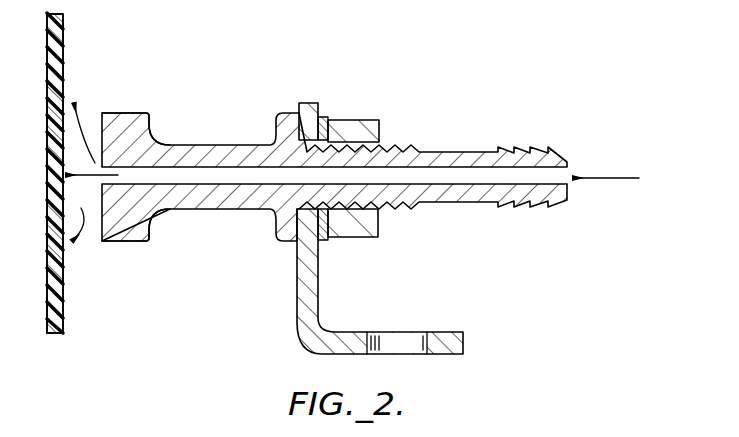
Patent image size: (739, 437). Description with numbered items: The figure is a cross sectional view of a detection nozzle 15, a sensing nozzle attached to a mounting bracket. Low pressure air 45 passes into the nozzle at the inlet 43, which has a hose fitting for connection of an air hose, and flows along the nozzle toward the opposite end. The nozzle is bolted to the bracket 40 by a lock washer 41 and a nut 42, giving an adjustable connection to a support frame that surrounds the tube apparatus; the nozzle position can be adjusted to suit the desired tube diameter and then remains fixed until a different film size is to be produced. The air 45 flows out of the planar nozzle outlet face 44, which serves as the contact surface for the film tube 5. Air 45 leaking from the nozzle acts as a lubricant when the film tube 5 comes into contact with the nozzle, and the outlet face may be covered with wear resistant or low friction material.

The film tube 5 is at (64, 32).
The detection nozzle 15 is at (560, 58).
The bracket 40 is at (343, 332).
The lock washer 41 is at (324, 116).
The nut 42 is at (379, 124).
The inlet 43 is at (569, 178).
The planar nozzle outlet face 44 is at (98, 118).
The low pressure air 45 is at (81, 210).